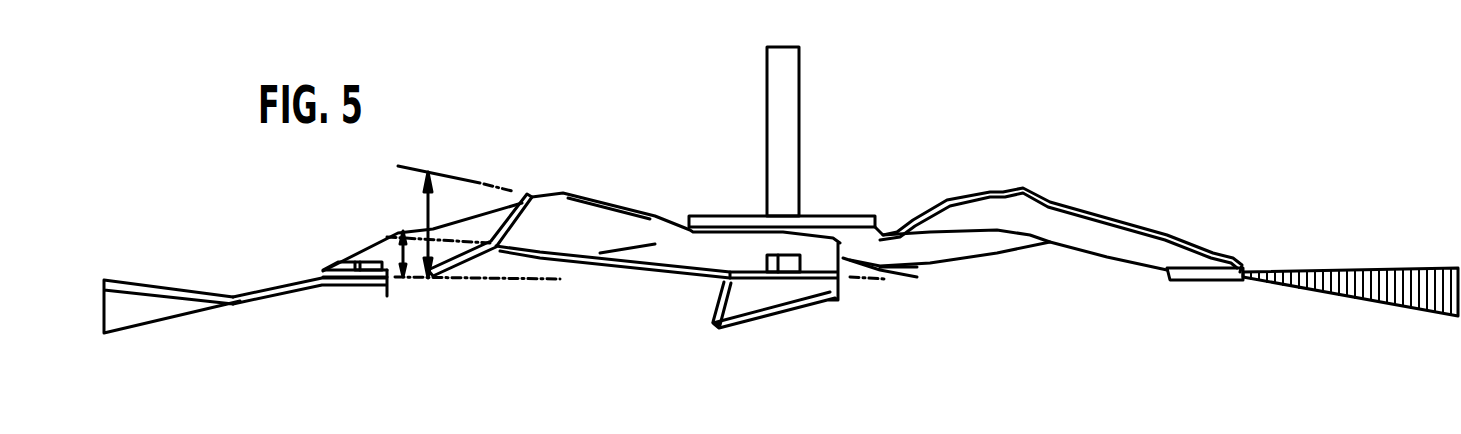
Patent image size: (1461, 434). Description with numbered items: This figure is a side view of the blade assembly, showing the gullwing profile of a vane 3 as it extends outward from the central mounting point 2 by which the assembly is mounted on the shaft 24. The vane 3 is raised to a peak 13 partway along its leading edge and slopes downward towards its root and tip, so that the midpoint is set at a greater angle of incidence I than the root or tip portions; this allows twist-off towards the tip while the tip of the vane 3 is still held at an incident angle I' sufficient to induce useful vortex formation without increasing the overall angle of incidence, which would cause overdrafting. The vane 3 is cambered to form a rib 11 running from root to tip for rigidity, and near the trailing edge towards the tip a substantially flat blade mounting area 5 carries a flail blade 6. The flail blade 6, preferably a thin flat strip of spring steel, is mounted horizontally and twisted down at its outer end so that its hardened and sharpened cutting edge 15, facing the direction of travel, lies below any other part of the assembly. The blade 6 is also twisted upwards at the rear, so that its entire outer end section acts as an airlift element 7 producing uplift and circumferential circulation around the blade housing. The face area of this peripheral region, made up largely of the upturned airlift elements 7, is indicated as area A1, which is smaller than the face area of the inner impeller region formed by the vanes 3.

The central mounting point 2 is at (727, 216).
The vane 3 is at (597, 232).
The blade mounting area 5 is at (390, 287).
The flail blade 6 is at (277, 293).
The airlift element 7 is at (150, 302).
The rib 11 is at (673, 253).
The peak 13 is at (543, 145).
The cutting edge 15 is at (708, 322).
The shaft 24 is at (777, 123).
The face area of the peripheral region A1 is at (1403, 283).
The angle of incidence I is at (429, 222).
The incident angle of the vane tip I' is at (395, 247).